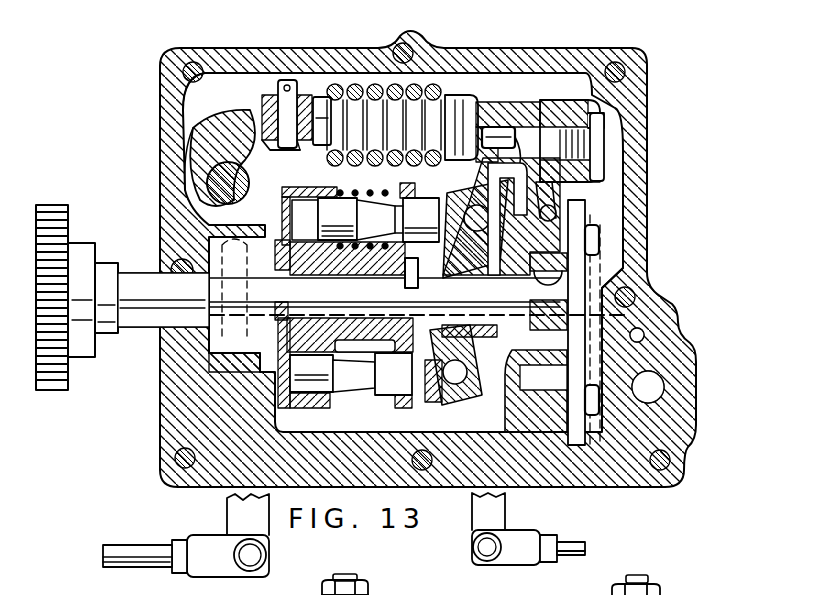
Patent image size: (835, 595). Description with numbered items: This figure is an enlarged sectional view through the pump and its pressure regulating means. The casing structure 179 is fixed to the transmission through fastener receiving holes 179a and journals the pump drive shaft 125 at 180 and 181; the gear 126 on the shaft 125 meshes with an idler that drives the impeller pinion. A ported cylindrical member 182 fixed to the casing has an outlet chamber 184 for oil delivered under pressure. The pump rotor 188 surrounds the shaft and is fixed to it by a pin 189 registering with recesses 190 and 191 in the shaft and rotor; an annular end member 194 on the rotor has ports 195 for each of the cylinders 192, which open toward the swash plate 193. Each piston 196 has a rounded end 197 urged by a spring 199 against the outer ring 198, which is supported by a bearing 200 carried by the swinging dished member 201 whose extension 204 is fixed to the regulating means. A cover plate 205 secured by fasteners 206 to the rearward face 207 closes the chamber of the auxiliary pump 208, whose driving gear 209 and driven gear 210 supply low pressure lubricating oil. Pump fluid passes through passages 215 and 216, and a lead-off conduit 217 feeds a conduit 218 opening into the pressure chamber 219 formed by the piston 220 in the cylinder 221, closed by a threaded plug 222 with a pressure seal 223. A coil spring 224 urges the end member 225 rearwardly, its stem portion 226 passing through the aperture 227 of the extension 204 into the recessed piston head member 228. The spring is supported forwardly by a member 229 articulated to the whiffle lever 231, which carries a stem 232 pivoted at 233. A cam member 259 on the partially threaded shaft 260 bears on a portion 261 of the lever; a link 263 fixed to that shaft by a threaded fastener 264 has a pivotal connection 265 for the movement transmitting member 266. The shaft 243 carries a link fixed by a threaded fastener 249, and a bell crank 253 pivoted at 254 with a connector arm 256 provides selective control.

The gear 126 is at (46, 207).
The pump drive shaft 125 is at (148, 310).
The casing structure 179 is at (200, 232).
The fastener receiving holes 179a is at (642, 72).
The journal 180 is at (205, 330).
The outlet chamber 184 is at (212, 362).
The ported cylindrical member 182 is at (262, 262).
The ports 195 is at (300, 267).
The pump rotor 188 is at (350, 270).
The annular end member 194 is at (370, 300).
The recess 190 is at (350, 321).
The recess 191 is at (360, 250).
The cylinders 192 is at (338, 216).
The swash plate 193 is at (417, 212).
The outer ring 198 is at (418, 224).
The aperture 227 is at (396, 213).
The pin 189 is at (431, 284).
The journal 181 is at (467, 268).
The driving gear 209 is at (502, 268).
The spring 199 is at (304, 373).
The piston 196 is at (330, 396).
The rounded end 197 is at (400, 398).
The bearing 200 is at (455, 379).
The swinging dished member 201 is at (464, 404).
The driven gear 210 is at (470, 402).
The auxiliary pump 208 is at (533, 415).
The extension 204 is at (490, 110).
The stem portion 226 is at (508, 127).
The recessed piston head member 228 is at (528, 150).
The pressure chamber 219 is at (545, 100).
The piston 220 is at (570, 131).
The cylinder 221 is at (604, 172).
The threaded plug 222 is at (604, 147).
The pressure seal 223 is at (604, 120).
The conduit 218 is at (556, 200).
The lead-off conduit 217 is at (556, 212).
The rearward face 207 is at (570, 232).
The fasteners 206 is at (600, 240).
The cover plate 205 is at (615, 278).
The passage 216 is at (645, 337).
The passage 215 is at (652, 387).
The coil spring 224 is at (345, 73).
The end member 225 is at (460, 95).
The member 229 is at (323, 95).
The whiffle lever 231 is at (262, 75).
The stem 232 is at (277, 160).
The pivot 233 is at (314, 162).
The cam member 259 is at (185, 130).
The partially threaded shaft 260 is at (195, 192).
The portion of the lever 261 is at (212, 91).
The link 263 is at (266, 497).
The pivotal connection 265 is at (256, 556).
The movement transmitting member 266 is at (115, 555).
The bell crank 253 is at (503, 512).
The pivot support 254 is at (477, 566).
The connector arm 256 is at (539, 562).
The shaft 243 is at (348, 566).
The threaded fastener 249 is at (364, 586).
The threaded fastener 264 is at (658, 589).